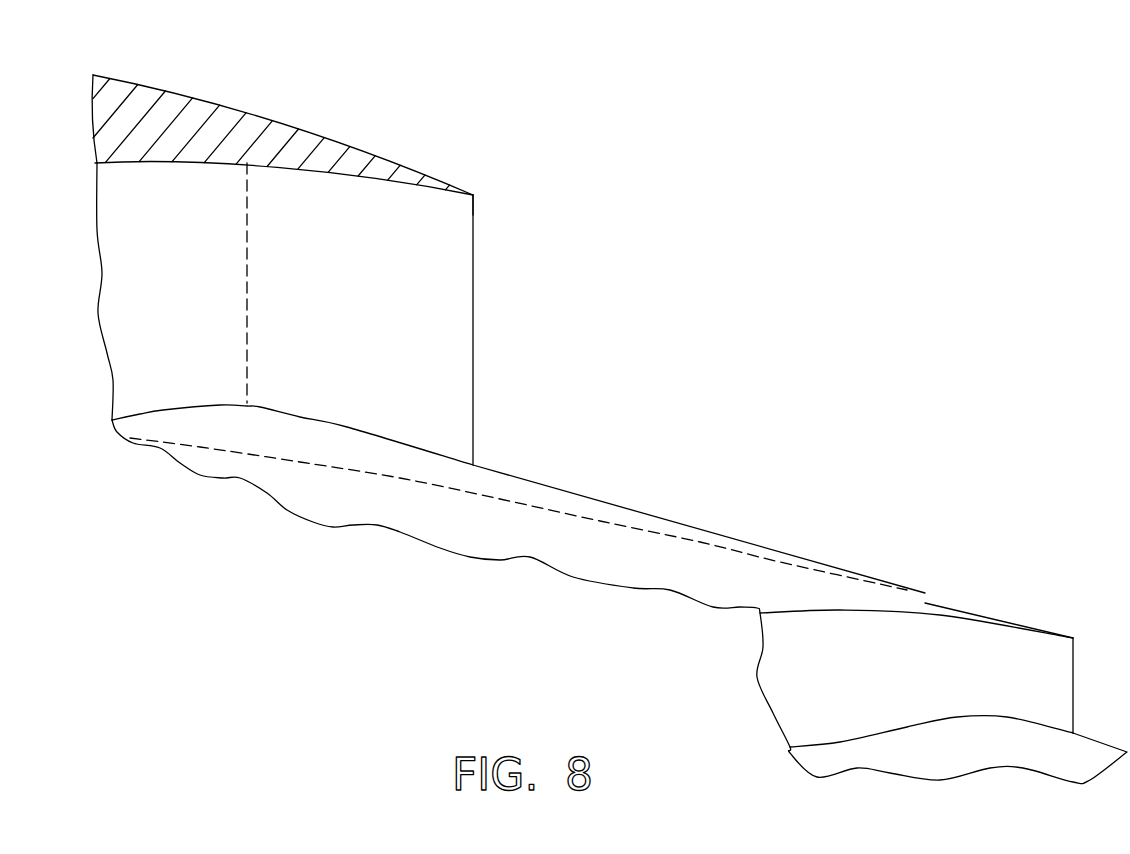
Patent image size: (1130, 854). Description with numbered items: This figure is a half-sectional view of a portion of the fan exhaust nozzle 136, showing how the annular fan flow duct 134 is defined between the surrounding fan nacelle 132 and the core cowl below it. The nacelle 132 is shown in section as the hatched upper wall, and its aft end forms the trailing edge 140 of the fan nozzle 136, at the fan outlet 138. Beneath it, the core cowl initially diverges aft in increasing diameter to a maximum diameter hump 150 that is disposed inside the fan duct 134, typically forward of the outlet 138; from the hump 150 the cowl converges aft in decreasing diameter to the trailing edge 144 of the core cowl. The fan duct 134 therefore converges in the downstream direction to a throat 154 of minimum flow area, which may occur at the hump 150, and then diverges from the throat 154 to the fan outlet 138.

The fan nacelle 132 is at (333, 172).
The fan flow duct 134 is at (203, 236).
The fan exhaust nozzle 136 is at (405, 68).
The fan outlet 138 is at (473, 347).
The trailing edge 140 is at (474, 195).
The trailing edge of the core cowl 144 is at (1083, 602).
The maximum diameter hump 150 is at (246, 399).
The throat 154 is at (247, 332).